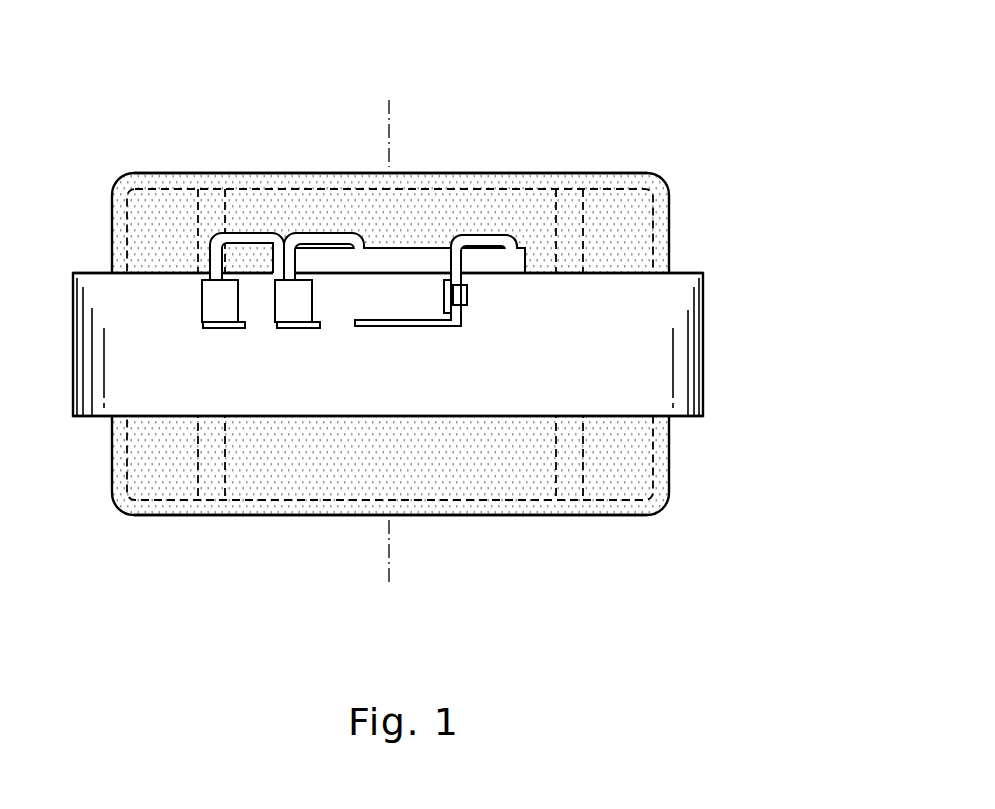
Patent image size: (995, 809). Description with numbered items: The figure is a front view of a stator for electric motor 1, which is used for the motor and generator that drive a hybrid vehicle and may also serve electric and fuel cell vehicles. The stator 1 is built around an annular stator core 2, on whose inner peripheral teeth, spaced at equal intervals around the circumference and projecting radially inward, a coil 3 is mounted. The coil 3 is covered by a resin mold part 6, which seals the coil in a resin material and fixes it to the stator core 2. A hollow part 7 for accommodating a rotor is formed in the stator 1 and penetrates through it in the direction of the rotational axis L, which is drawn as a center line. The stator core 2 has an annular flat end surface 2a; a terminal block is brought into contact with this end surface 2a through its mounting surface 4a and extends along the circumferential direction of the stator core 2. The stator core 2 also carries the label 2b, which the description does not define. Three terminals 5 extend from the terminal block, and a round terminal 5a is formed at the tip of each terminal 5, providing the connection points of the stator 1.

The stator for electric motor 1 is at (652, 98).
The stator core 2 is at (703, 355).
The end surface 2a is at (703, 273).
The lower edge of band 2b is at (703, 416).
The coil 3 is at (661, 472).
The mounting surface 4a is at (346, 274).
The terminal 5 is at (252, 233).
The round terminal 5a is at (217, 328).
The resin mold part 6 is at (180, 174).
The hollow part 7 is at (225, 462).
The rotational axis L is at (388, 124).